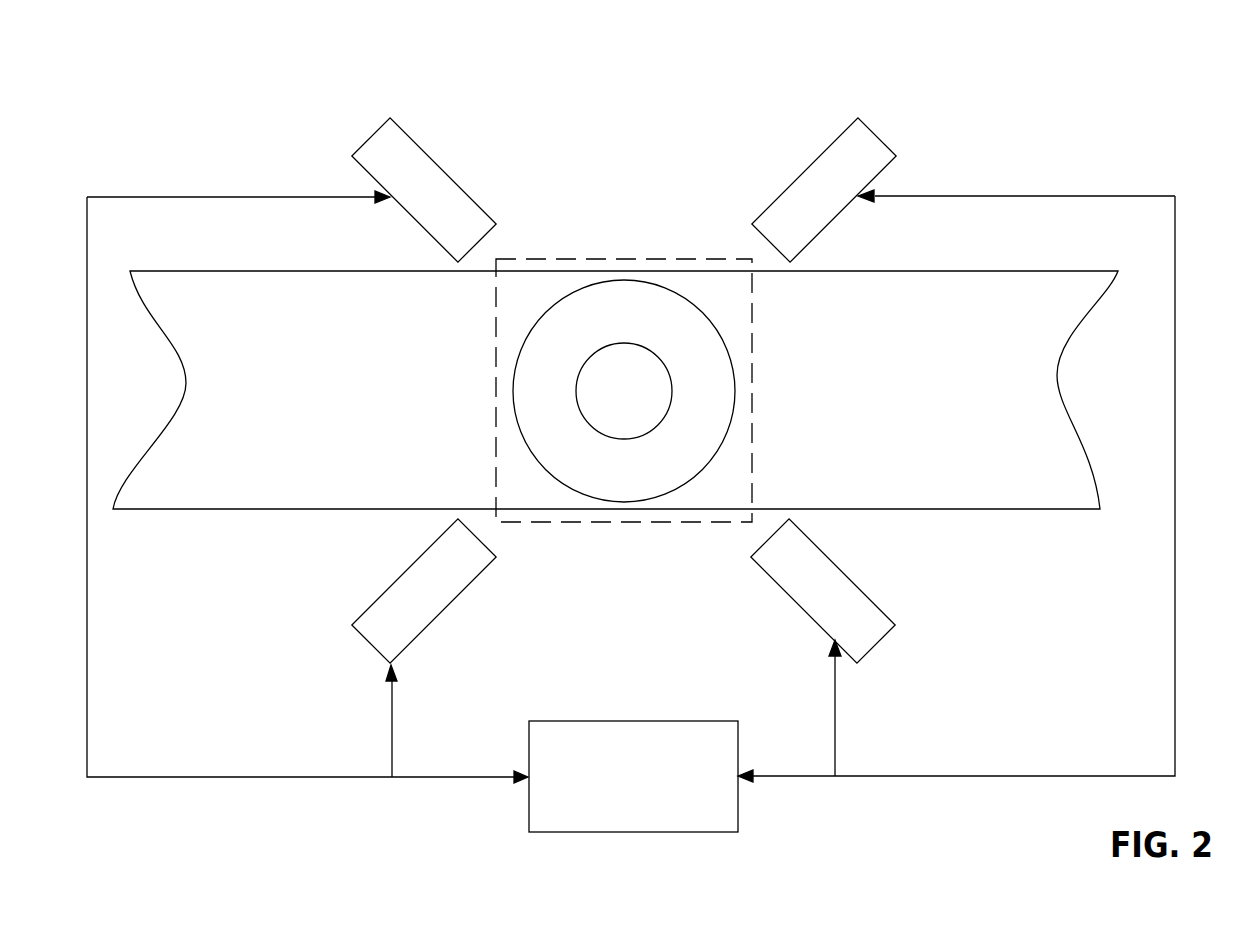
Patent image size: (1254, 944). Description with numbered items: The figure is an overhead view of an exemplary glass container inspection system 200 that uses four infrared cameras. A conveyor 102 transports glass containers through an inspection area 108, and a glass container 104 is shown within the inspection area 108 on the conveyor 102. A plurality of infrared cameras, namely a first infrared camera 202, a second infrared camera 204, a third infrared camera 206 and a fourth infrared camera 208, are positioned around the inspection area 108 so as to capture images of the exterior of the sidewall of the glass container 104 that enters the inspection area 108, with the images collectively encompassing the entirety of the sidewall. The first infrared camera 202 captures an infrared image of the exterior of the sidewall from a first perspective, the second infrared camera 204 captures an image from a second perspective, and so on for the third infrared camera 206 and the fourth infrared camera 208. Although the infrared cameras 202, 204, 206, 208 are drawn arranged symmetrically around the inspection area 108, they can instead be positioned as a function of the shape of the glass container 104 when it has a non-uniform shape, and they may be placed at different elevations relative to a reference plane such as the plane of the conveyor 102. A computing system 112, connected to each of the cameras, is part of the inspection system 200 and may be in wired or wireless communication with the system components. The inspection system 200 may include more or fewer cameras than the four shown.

The glass container inspection system 200 is at (214, 68).
The conveyor 102 is at (1033, 488).
The glass container 104 is at (642, 326).
The inspection area 108 is at (640, 259).
The computing system 112 is at (728, 830).
The first infrared camera 202 is at (397, 578).
The second infrared camera 204 is at (368, 137).
The third infrared camera 206 is at (823, 152).
The fourth infrared camera 208 is at (878, 645).